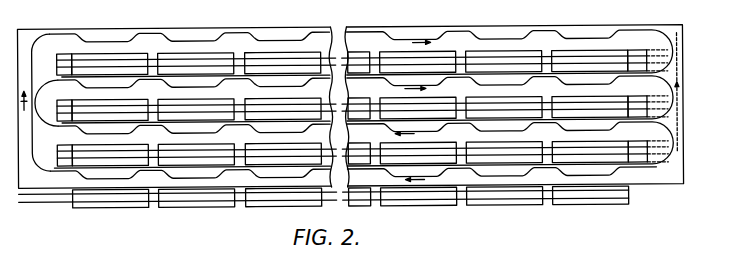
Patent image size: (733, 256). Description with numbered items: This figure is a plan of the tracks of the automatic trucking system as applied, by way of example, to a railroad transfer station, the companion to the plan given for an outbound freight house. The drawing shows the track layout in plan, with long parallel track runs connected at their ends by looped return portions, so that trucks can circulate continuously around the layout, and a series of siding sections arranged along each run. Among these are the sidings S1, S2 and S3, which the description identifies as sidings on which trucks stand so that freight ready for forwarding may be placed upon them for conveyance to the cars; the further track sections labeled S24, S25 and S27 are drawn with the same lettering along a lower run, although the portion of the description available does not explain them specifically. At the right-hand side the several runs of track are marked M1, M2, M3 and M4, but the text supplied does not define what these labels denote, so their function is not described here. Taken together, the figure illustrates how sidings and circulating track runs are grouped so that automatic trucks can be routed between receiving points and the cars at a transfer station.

The first tube module M1 is at (668, 58).
The second tube module M2 is at (668, 104).
The third tube module M3 is at (668, 149).
The fourth tube module M4 is at (628, 192).
The siding S1 is at (112, 48).
The siding S2 is at (197, 48).
The siding S3 is at (284, 48).
The twenty-fourth section S24 is at (188, 140).
The twenty-fifth section S25 is at (110, 140).
The twenty-seventh section S27 is at (278, 140).